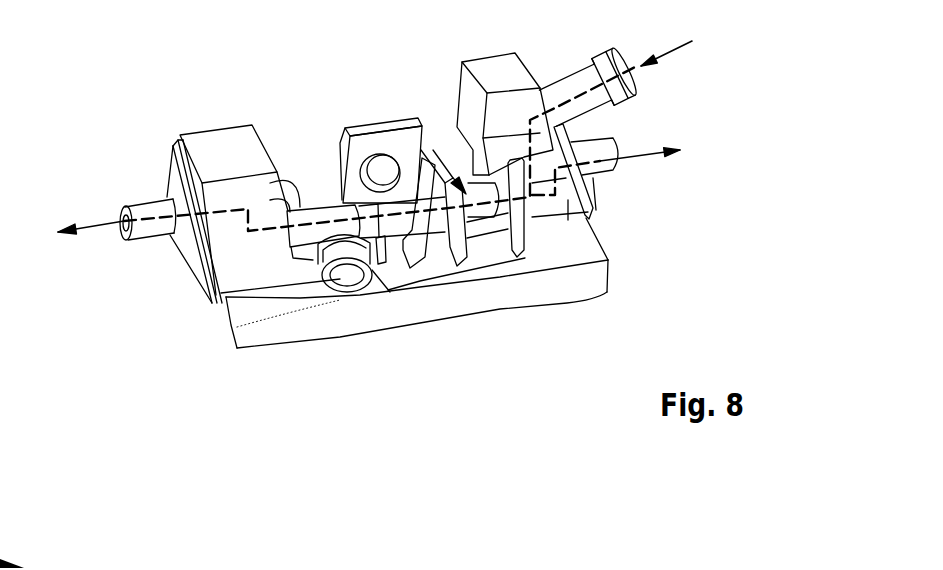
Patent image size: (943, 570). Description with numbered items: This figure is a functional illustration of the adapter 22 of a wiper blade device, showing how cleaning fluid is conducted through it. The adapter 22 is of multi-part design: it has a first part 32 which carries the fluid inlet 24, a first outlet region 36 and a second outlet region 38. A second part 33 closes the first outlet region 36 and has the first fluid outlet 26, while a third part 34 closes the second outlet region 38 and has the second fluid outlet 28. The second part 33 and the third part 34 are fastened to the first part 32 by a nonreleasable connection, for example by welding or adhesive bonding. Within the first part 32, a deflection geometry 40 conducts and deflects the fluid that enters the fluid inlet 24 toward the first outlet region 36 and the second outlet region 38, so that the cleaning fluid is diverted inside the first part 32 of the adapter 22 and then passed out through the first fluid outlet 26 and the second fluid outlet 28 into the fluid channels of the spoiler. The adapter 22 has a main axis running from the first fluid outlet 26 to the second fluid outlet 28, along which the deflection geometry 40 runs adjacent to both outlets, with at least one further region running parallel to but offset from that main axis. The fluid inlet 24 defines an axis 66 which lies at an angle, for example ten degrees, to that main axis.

The adapter 22 is at (458, 303).
The fluid inlet 24 is at (577, 82).
The first fluid outlet 26 is at (611, 142).
The second fluid outlet 28 is at (145, 212).
The first part 32 is at (369, 317).
The second part 33 is at (595, 189).
The third part 34 is at (177, 144).
The first outlet region 36 is at (567, 200).
The second outlet region 38 is at (222, 140).
The deflection geometry 40 is at (456, 180).
The axis 66 is at (675, 55).